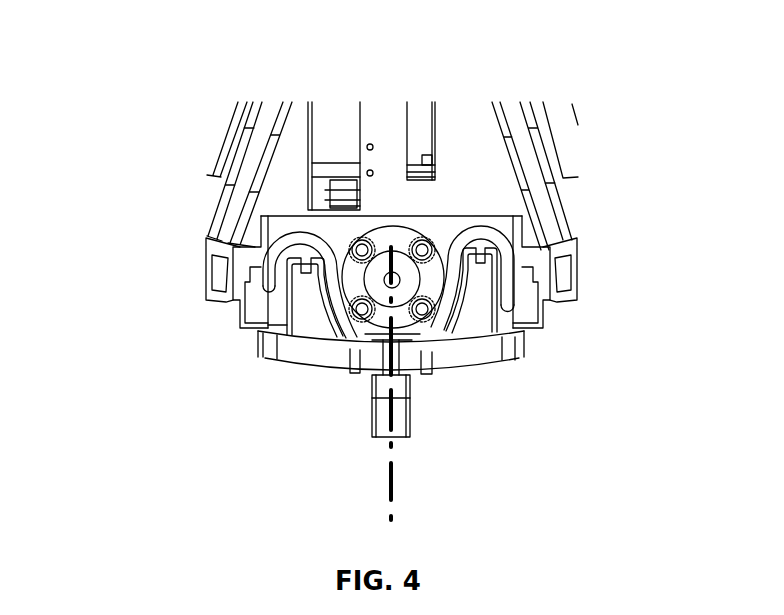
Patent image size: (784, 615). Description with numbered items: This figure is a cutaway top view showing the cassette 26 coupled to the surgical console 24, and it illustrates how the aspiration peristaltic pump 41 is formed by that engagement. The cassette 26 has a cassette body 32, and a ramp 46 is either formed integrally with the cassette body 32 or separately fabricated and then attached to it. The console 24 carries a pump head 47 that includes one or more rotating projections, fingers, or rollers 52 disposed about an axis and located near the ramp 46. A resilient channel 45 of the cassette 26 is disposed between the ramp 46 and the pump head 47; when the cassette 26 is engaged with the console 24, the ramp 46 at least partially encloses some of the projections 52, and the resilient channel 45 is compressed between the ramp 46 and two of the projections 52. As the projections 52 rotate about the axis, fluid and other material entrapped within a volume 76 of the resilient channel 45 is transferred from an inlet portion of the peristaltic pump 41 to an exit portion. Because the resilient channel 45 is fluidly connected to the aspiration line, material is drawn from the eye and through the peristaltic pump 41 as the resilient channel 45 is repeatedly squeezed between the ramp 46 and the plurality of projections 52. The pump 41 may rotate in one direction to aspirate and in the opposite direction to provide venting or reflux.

The console 24 is at (176, 287).
The cassette 26 is at (574, 362).
The cassette body 32 is at (297, 360).
The peristaltic pump 41 is at (300, 321).
The resilient channel 45 is at (440, 232).
The ramp 46 is at (380, 338).
The pump head 47 is at (390, 222).
The projections 52 is at (352, 246).
The volume 76 is at (400, 333).